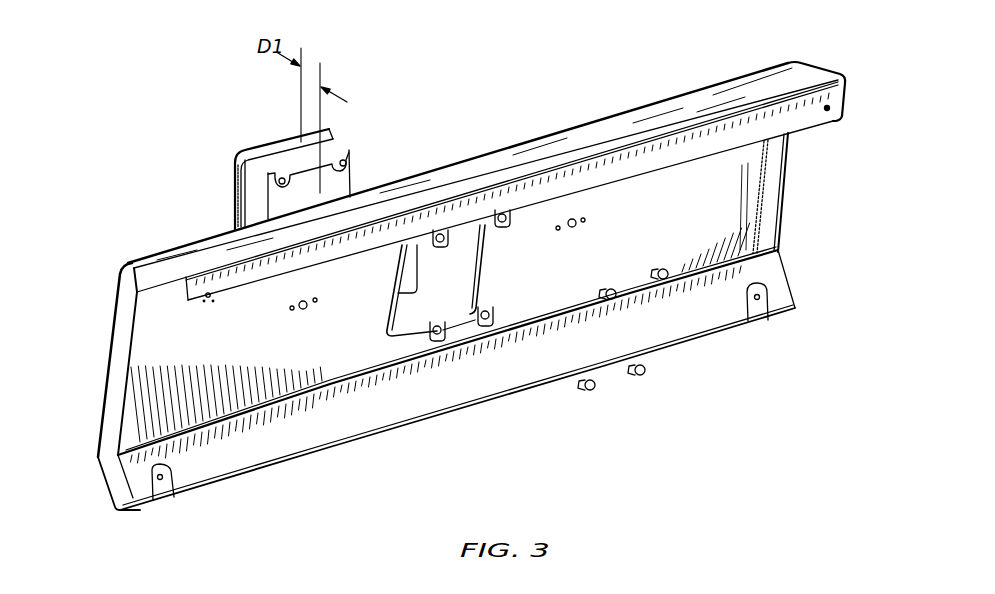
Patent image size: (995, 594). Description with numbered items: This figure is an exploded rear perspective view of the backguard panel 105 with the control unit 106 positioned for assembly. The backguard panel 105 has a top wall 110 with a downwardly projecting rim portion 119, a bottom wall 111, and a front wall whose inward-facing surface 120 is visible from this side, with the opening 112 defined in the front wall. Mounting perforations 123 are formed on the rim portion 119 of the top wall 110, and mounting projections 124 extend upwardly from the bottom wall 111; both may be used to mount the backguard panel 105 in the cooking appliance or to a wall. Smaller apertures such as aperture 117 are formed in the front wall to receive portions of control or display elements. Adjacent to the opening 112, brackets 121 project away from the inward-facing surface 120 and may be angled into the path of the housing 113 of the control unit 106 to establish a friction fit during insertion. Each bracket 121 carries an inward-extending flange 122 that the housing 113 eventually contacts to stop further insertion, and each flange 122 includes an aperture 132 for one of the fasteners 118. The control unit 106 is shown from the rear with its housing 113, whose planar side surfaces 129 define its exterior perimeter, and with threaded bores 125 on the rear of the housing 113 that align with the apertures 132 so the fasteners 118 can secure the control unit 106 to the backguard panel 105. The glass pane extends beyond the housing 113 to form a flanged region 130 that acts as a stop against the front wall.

The backguard panel 105 is at (117, 277).
The control unit 106 is at (287, 154).
The top wall 110 is at (500, 150).
The bottom wall 111 is at (107, 491).
The opening 112 is at (453, 302).
The housing 113 is at (253, 204).
The aperture 117 is at (573, 216).
The fasteners 118 is at (647, 372).
The downwardly projecting rim portion 119 is at (800, 113).
The inward-facing surface 120 is at (233, 378).
The brackets 121 is at (470, 343).
The inward-extending flange 122 is at (492, 320).
The mounting perforations 123 is at (203, 299).
The mounting projections 124 is at (760, 312).
The threaded bores 125 is at (357, 158).
The planar side surfaces 129 is at (253, 184).
The flanged region 130 is at (333, 128).
The aperture 132 is at (410, 340).